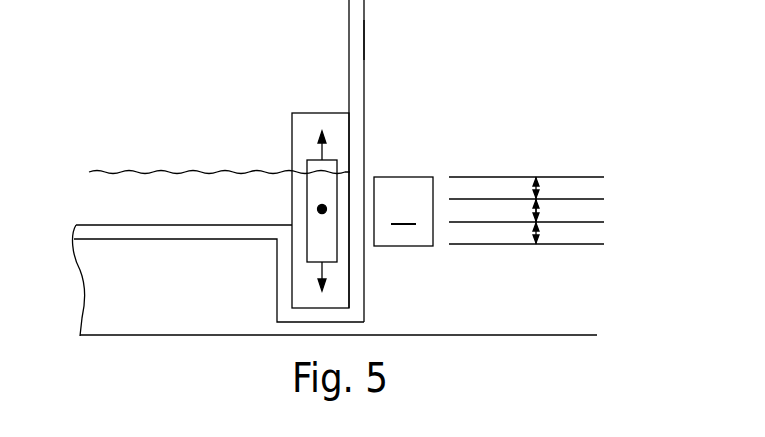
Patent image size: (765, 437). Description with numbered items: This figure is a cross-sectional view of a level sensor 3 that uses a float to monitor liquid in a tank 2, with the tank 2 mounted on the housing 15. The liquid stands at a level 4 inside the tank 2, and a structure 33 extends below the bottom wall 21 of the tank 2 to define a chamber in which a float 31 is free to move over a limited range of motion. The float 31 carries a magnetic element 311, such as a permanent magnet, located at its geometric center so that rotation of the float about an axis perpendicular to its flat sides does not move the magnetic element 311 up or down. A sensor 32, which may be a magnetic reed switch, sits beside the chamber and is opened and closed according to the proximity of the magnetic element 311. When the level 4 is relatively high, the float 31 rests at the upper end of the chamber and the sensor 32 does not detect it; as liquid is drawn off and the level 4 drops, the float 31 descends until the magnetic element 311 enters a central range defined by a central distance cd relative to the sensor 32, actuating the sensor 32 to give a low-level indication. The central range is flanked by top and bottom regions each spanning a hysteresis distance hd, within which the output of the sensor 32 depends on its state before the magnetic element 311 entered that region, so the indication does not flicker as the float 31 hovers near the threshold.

The tank 2 is at (349, 12).
The housing 15 is at (365, 41).
The level sensor 3 is at (340, 188).
The structure 33 is at (316, 113).
The float 31 is at (312, 183).
The magnetic element 311 is at (326, 212).
The sensor 32 is at (403, 211).
The level 4 is at (135, 171).
The bottom wall 21 is at (106, 225).
The hysteresis distance hd is at (538, 186).
The central distance cd is at (538, 210).